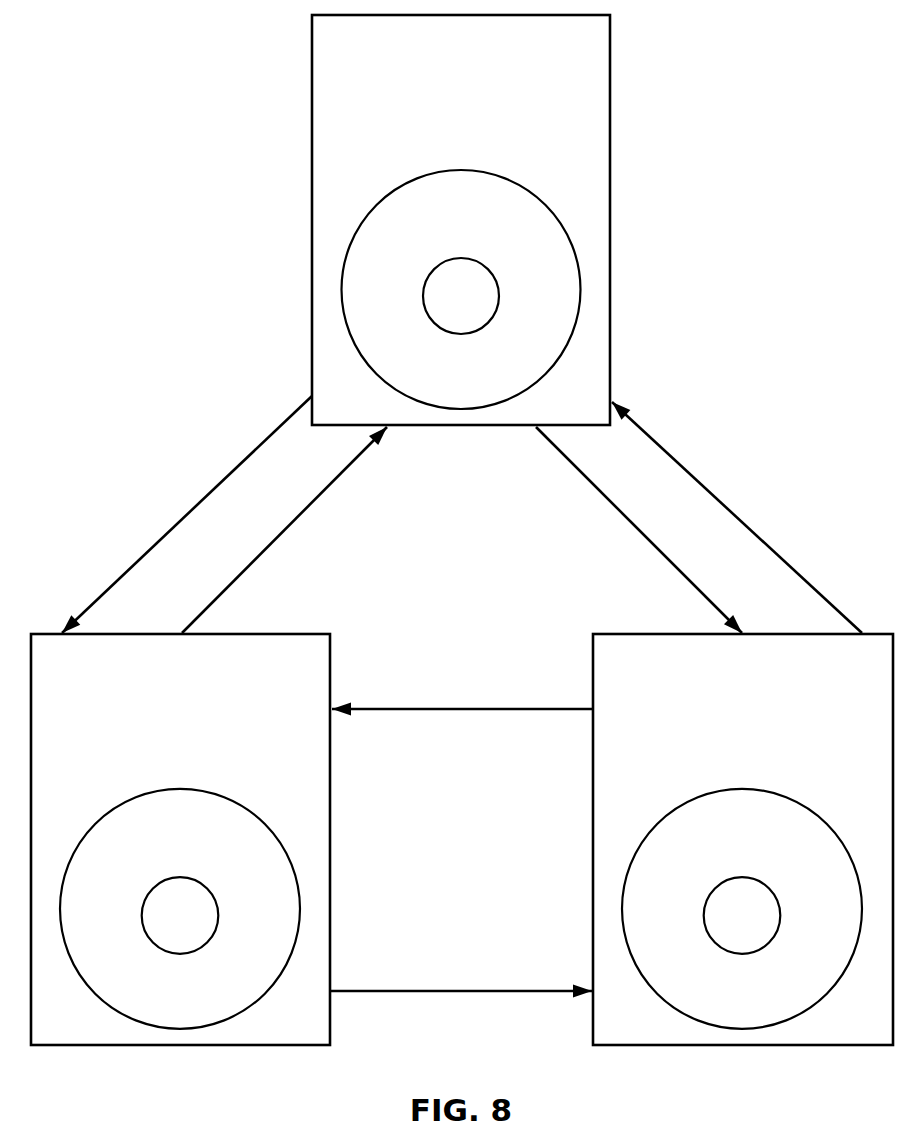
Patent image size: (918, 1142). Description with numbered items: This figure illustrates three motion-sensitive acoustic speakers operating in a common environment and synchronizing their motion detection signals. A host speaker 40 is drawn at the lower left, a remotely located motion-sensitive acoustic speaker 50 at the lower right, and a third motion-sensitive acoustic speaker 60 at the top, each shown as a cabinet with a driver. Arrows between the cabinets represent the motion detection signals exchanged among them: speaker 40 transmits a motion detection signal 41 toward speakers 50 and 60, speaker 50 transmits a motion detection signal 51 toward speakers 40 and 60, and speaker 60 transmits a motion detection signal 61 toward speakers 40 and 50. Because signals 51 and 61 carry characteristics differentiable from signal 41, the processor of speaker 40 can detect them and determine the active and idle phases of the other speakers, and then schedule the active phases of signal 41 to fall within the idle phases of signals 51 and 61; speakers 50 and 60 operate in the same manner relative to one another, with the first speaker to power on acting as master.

The primary motion-sensitive acoustic speaker 40 is at (181, 668).
The remotely located motion-sensitive acoustic speaker 50 is at (744, 668).
The motion-sensitive acoustic speaker 60 is at (462, 50).
The motion detection signal 41 is at (278, 537).
The motion detection signal 51 is at (765, 537).
The motion detection signal 61 is at (169, 530).